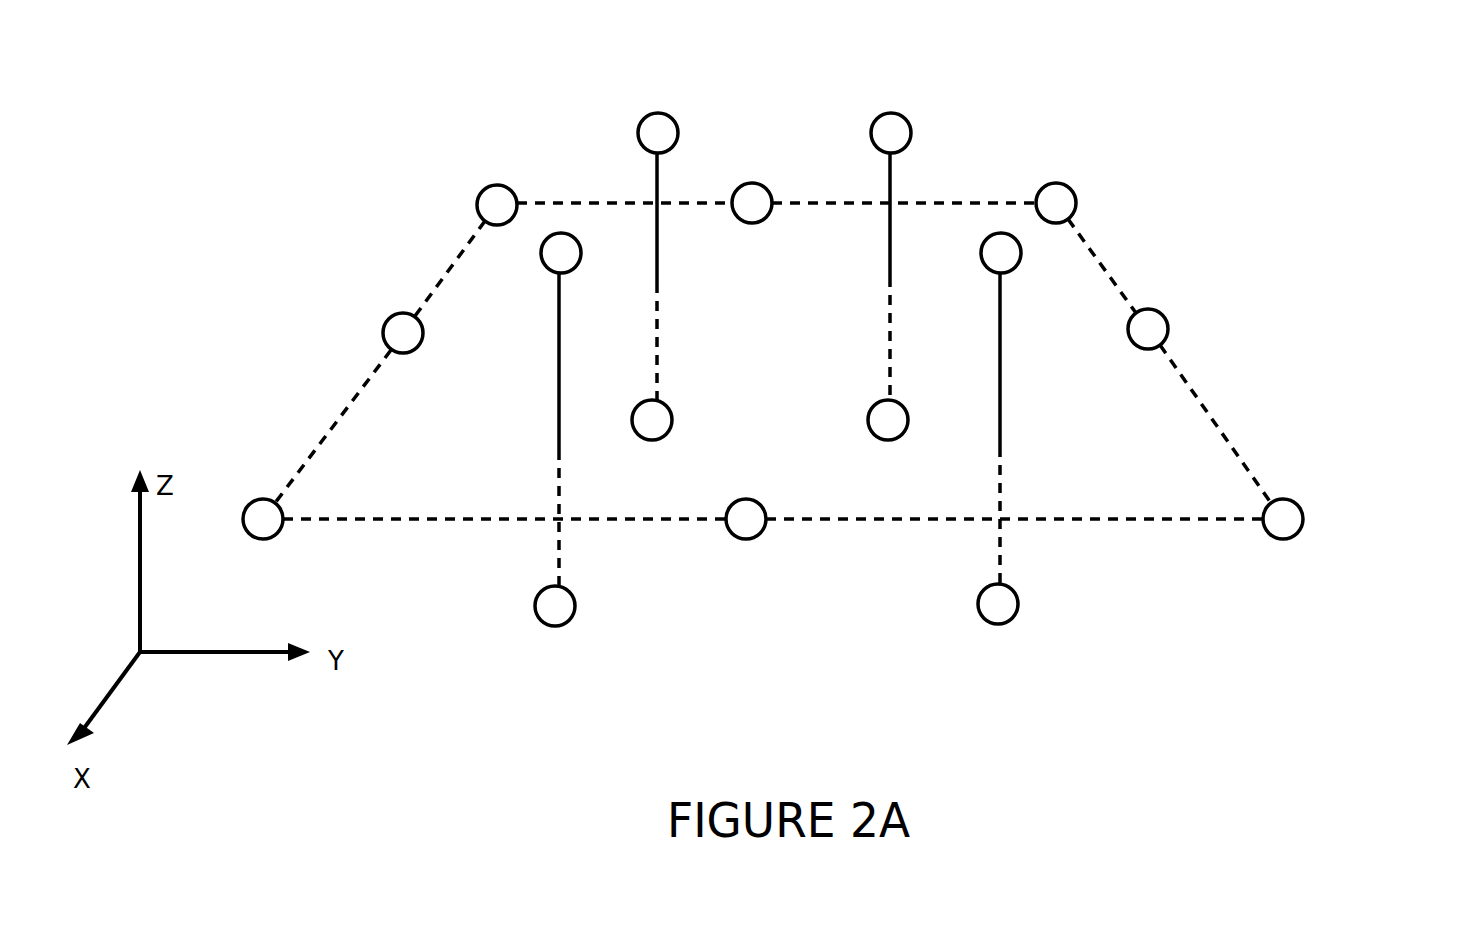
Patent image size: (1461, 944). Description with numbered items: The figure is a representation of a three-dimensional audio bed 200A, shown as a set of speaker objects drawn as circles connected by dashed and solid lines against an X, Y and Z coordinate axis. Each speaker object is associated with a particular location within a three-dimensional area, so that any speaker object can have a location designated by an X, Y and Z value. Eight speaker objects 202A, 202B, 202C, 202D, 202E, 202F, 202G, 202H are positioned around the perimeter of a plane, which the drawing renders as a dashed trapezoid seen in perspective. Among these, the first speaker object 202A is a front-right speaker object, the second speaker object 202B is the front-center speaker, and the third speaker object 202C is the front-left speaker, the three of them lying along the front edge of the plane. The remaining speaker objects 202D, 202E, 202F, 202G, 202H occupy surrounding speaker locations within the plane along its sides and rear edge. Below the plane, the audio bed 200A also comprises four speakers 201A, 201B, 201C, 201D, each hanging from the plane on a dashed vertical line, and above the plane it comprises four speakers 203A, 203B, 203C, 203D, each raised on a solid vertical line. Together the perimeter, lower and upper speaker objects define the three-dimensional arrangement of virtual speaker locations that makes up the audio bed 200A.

The 3D audio bed 200A is at (1370, 148).
The speaker object 201A is at (545, 625).
The speaker object 201B is at (987, 623).
The speaker object 201C is at (640, 437).
The speaker object 201D is at (872, 437).
The first speaker object 202A is at (262, 539).
The second speaker object 202B is at (735, 538).
The third speaker object 202C is at (1270, 538).
The speaker object 202D is at (1168, 322).
The speaker object 202E is at (1073, 191).
The speaker object 202F is at (758, 184).
The speaker object 202G is at (492, 186).
The speaker object 202H is at (410, 314).
The speaker object 203A is at (572, 234).
The speaker object 203B is at (1003, 233).
The speaker object 203C is at (911, 134).
The speaker object 203D is at (676, 125).